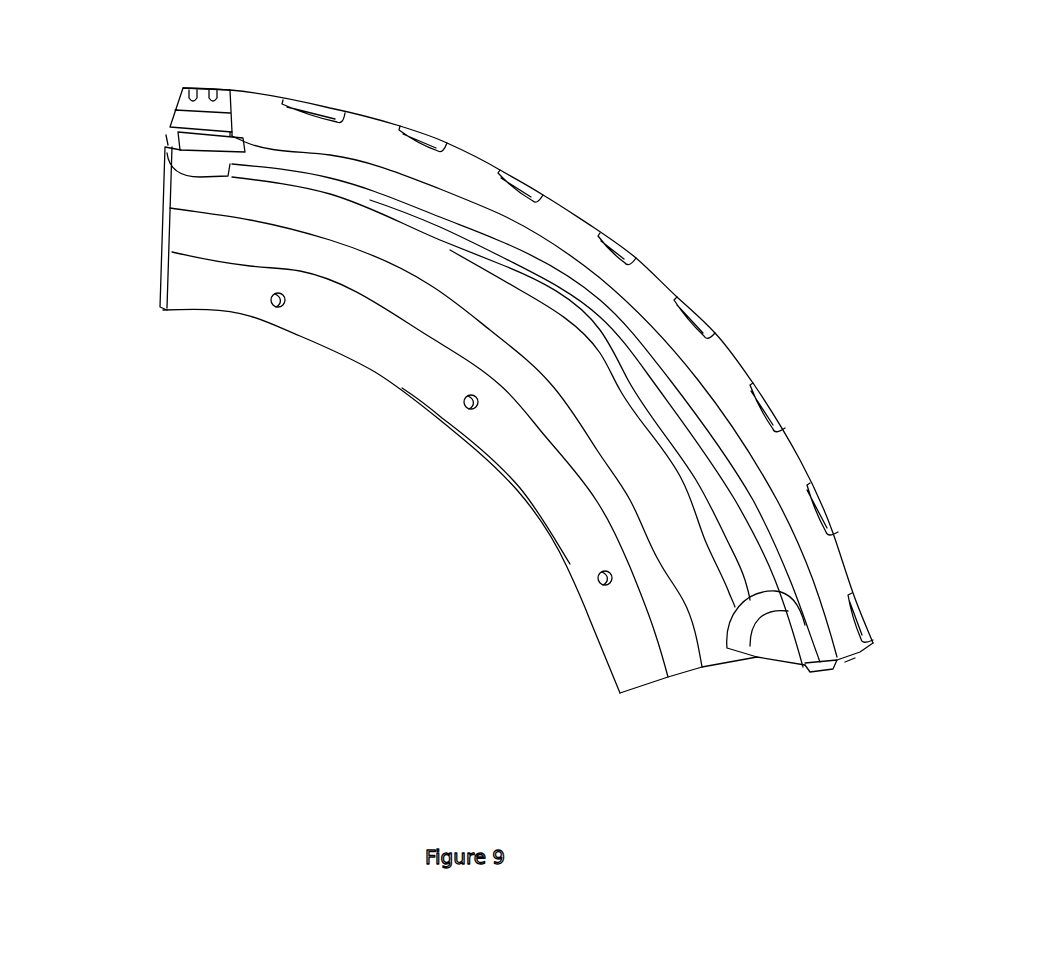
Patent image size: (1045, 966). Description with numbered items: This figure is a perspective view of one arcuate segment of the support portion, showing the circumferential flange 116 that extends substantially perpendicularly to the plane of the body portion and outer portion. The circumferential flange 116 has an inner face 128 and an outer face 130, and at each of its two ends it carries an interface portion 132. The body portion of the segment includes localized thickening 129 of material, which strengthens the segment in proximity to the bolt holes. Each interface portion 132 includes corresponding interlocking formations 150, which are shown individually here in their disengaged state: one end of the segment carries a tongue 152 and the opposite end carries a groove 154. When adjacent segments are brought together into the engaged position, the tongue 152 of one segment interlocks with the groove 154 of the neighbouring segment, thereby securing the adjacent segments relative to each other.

The circumferential flange 116 is at (553, 274).
The inner face 128 is at (300, 196).
The localized thickening 129 is at (447, 440).
The outer face 130 is at (172, 110).
The interface portion 132 is at (155, 136).
The interlocking formations 150 is at (247, 127).
The tongue 152 is at (834, 672).
The groove 154 is at (197, 143).